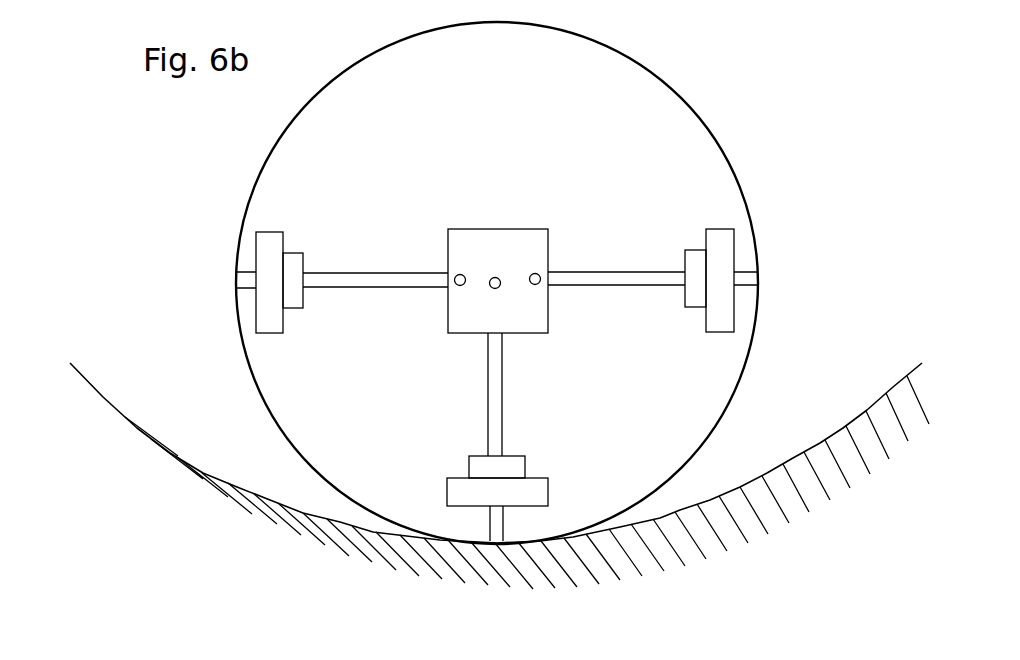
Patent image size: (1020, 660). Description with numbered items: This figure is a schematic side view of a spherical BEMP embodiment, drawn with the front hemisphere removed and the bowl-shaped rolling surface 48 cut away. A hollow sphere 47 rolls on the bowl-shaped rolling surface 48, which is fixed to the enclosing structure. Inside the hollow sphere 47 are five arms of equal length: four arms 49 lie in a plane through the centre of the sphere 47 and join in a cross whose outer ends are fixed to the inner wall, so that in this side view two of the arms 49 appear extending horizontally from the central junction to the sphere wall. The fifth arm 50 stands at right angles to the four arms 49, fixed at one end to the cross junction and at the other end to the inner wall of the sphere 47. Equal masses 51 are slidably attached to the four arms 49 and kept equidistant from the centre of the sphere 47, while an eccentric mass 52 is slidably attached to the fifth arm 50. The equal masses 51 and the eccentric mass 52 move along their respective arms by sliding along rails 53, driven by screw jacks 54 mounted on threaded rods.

The hollow sphere 47 is at (697, 115).
The bowl-shaped rolling surface 48 is at (897, 382).
The arms 49 is at (236, 283).
The fifth arm 50 is at (479, 344).
The equal masses 51 is at (270, 232).
The eccentric mass 52 is at (548, 488).
The rails 53 is at (355, 288).
The screw jacks 54 is at (293, 310).